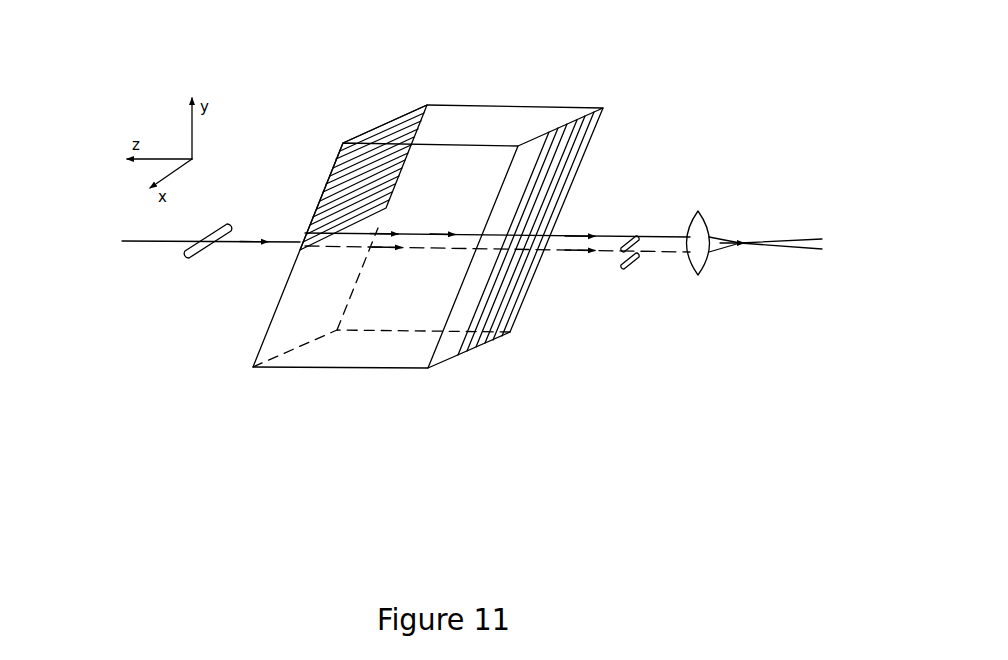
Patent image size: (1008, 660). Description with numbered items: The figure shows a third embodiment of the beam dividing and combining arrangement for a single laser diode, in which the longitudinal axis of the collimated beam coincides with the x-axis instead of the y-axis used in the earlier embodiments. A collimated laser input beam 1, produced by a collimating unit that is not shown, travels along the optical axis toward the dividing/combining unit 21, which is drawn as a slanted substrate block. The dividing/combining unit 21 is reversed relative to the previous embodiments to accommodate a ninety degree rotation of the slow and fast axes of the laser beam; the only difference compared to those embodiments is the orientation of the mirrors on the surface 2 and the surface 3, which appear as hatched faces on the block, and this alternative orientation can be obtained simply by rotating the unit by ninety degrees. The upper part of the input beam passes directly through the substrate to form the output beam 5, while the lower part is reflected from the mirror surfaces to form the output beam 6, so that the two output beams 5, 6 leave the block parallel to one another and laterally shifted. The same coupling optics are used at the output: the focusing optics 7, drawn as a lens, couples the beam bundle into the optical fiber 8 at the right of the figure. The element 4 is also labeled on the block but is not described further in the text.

The collimated laser input beam 1 is at (207, 255).
The surface 2 is at (526, 239).
The surface 3 is at (363, 177).
The birefringent crystal 4 is at (428, 223).
The output beam 5 is at (630, 273).
The output beam 6 is at (630, 229).
The focusing optics 7 is at (698, 256).
The optical fiber 8 is at (765, 234).
The dividing/combining unit 21 is at (503, 62).